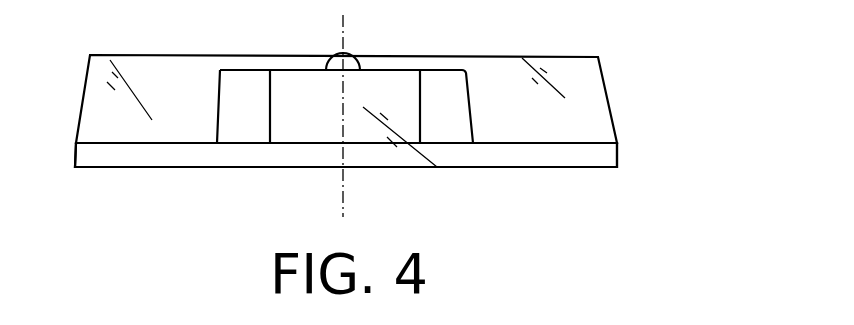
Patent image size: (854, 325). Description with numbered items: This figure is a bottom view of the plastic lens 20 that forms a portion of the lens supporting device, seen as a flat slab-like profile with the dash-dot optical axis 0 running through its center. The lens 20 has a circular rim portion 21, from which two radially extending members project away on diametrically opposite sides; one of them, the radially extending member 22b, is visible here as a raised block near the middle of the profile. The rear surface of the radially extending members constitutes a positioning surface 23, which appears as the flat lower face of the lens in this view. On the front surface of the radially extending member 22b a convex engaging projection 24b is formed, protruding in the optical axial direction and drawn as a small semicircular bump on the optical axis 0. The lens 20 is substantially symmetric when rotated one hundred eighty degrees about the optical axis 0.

The plastic lens 20 is at (536, 25).
The circular rim portion 21 is at (75, 152).
The radially extending member 22b is at (463, 115).
The positioning surface 23 is at (453, 145).
The convex engaging projection 24b is at (352, 55).
The optical axis 0 is at (342, 22).